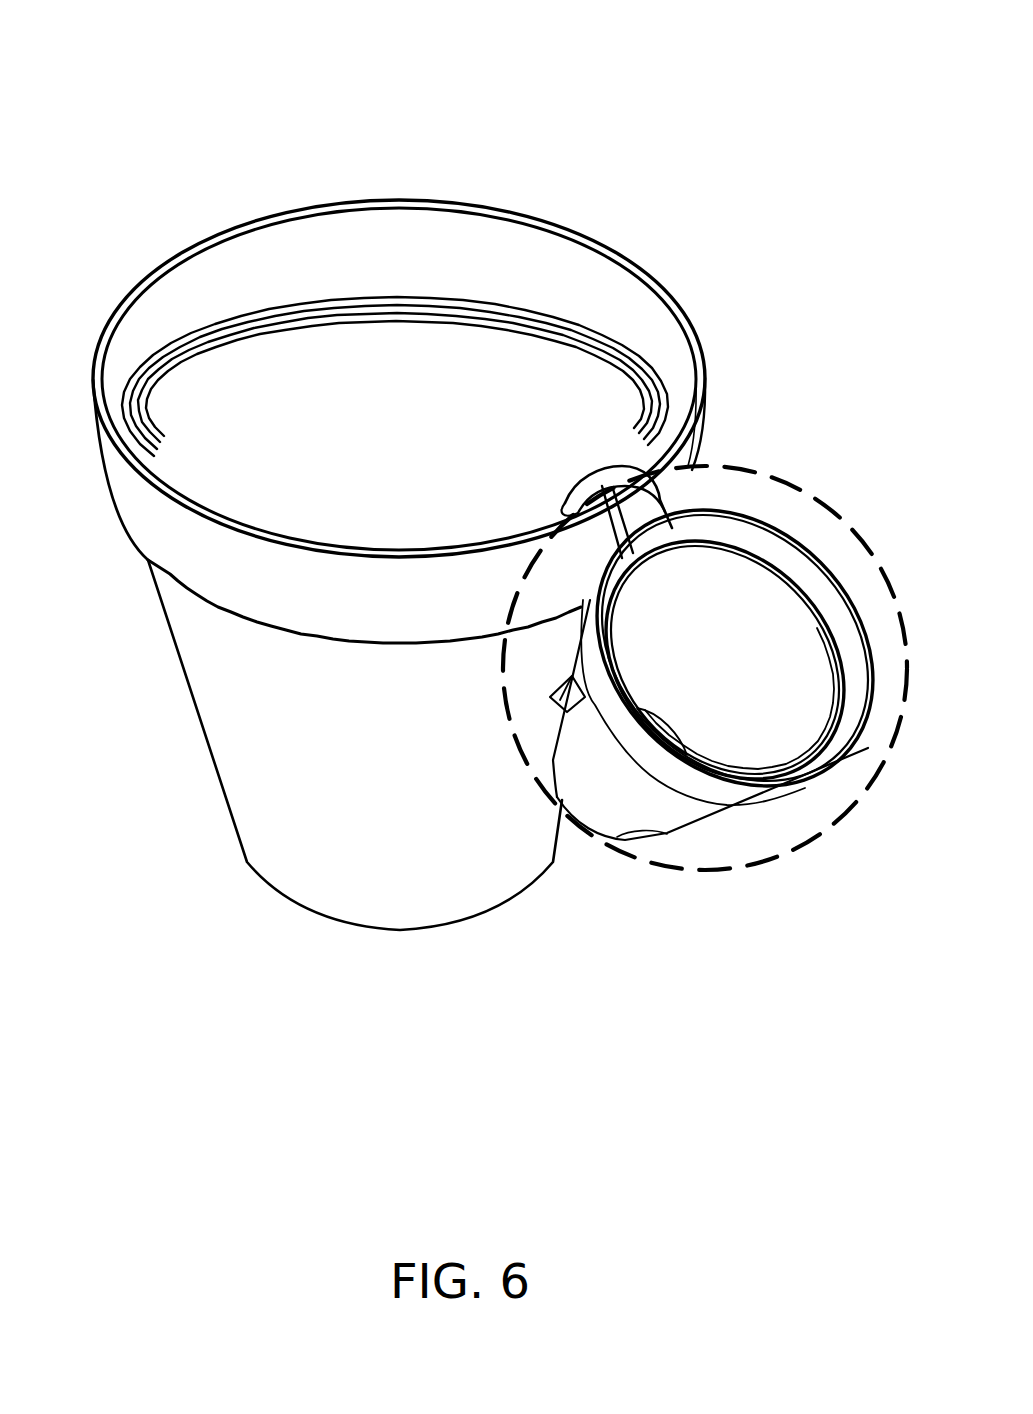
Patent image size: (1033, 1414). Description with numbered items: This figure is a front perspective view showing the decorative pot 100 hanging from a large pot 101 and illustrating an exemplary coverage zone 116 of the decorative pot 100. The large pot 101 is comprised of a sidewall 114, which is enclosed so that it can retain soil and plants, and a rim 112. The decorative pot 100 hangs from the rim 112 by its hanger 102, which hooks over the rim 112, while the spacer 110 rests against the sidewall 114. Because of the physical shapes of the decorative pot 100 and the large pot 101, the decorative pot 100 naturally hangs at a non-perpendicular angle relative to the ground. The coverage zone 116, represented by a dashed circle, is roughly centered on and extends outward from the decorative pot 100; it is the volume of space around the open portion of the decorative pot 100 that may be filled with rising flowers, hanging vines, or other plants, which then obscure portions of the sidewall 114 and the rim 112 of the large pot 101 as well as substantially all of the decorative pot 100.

The decorative pot 100 is at (822, 397).
The large pot 101 is at (168, 192).
The hanger 102 is at (592, 478).
The spacer 110 is at (548, 698).
The rim 112 is at (418, 255).
The sidewall 114 is at (278, 745).
The coverage zone 116 is at (722, 876).